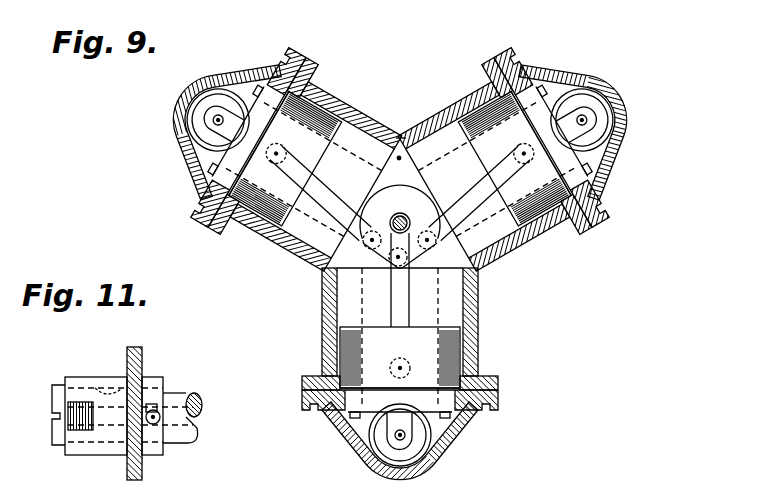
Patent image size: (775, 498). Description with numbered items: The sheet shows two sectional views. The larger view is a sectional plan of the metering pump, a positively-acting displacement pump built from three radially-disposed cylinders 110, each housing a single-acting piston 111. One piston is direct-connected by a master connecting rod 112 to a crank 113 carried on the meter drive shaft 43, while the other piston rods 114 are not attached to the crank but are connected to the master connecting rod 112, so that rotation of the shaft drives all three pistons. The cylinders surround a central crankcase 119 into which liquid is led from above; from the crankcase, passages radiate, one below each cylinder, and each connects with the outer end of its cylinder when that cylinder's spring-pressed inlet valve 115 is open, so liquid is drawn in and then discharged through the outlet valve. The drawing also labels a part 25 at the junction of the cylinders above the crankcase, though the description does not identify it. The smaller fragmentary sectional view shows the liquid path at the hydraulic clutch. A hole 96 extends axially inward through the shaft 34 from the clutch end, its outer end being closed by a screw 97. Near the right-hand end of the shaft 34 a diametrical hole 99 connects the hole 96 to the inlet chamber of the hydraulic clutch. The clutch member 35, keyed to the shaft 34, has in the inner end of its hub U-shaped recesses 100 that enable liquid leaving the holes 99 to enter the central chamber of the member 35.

In FIG. 9, the cylinder 110 is at (295, 95).
In FIG. 9, the single-acting piston 111 is at (493, 348).
In FIG. 9, the master connecting rod 112 is at (397, 295).
In FIG. 9, the crank 113 is at (395, 213).
In FIG. 9, the piston rod 114 is at (368, 193).
In FIG. 9, the inlet valve 115 is at (197, 124).
In FIG. 9, the central crankcase 119 is at (399, 158).
In FIG. 9, the crankcase wall 25 is at (417, 88).
In FIG. 9, the meter drive shaft 43 is at (408, 202).
In FIG. 11, the screw 97 is at (57, 432).
In FIG. 11, the diametrical hole 99 is at (158, 414).
In FIG. 11, the U-shaped recess 100 is at (151, 402).
In FIG. 11, the shaft 34 is at (199, 396).
In FIG. 11, the clutch member 35 is at (127, 460).
In FIG. 11, the hole 96 is at (199, 413).